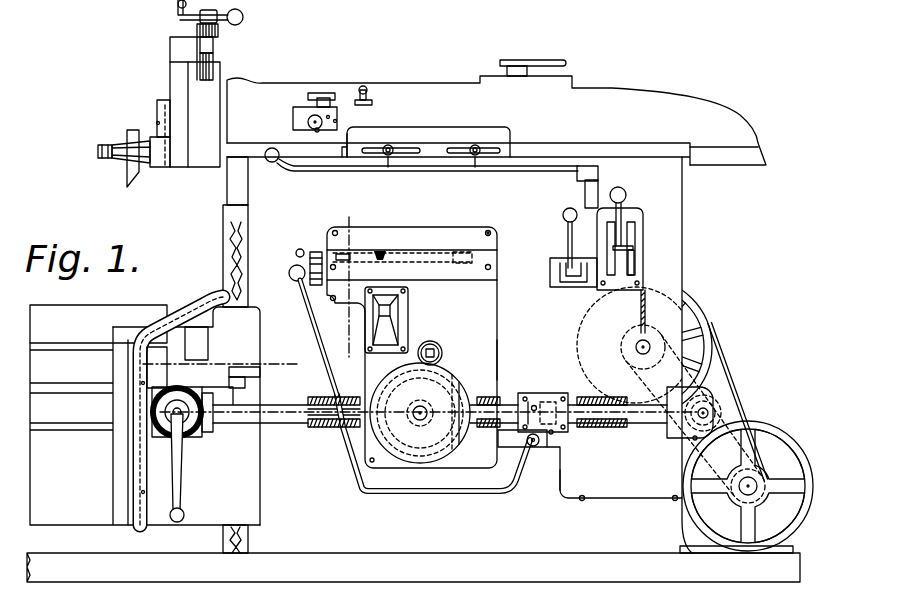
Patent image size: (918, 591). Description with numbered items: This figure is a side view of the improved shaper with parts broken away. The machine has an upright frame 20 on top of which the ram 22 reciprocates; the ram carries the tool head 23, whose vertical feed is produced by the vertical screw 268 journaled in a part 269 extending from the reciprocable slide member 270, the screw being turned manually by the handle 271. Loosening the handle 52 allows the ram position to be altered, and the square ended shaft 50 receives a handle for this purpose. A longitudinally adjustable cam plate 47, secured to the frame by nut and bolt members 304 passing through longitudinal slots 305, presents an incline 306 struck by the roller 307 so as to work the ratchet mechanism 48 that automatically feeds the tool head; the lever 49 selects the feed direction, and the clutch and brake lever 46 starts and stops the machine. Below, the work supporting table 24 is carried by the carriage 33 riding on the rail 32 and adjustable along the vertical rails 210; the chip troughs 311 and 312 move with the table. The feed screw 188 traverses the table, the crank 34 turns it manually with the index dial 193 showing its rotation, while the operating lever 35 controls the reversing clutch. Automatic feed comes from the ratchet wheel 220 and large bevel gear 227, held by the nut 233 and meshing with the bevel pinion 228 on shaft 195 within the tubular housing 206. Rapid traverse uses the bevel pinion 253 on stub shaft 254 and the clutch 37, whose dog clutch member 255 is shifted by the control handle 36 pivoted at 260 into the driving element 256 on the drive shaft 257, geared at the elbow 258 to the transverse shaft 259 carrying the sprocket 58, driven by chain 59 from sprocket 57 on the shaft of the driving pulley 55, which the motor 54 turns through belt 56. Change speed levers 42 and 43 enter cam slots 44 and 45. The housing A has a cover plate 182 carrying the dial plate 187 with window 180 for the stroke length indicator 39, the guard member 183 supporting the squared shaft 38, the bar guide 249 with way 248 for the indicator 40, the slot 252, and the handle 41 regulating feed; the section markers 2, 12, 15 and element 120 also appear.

The handle 271 is at (244, 17).
The part 269 is at (219, 40).
The vertical screw 268 is at (214, 70).
The vertical reciprocable slide member 270 is at (170, 73).
The tool head 23 is at (201, 160).
The ram 22 is at (683, 103).
The handle 52 is at (548, 60).
The lever 49 is at (319, 93).
The ratchet mechanism 48 is at (308, 122).
The roller 307 is at (315, 131).
The square ended shaft 50 is at (365, 86).
The incline 306 is at (351, 132).
The cam plate 47 is at (388, 127).
The nut and bolt members 304 is at (472, 147).
The longitudinal slots 305 is at (511, 141).
The clutch and brake lever 46 is at (281, 172).
The rod bracket 120 is at (600, 186).
The upright frame 20 is at (248, 208).
The vertical rails 210 is at (223, 243).
The carriage 33 is at (122, 517).
The work supporting table 24 is at (108, 305).
The transverse trough 312 is at (198, 302).
The vertical troughs 311 is at (128, 487).
The rail 32 is at (162, 346).
The operating lever 35 is at (246, 367).
The section line 15 is at (122, 379).
The section line 12 is at (280, 429).
The index dial 193 is at (206, 428).
The feed screw 188 is at (182, 425).
The crank 34 is at (184, 510).
The shaft 195 is at (315, 428).
The tubular housing 206 is at (327, 433).
The housing A is at (498, 324).
The section line 2 is at (356, 213).
The longitudinal horizontal slot 252 is at (363, 252).
The indicator 40 is at (387, 253).
The way 248 is at (462, 252).
The bar guide 249 is at (485, 253).
The dial plate 187 is at (408, 313).
The window 180 is at (395, 320).
The stroke length indicator 39 is at (392, 308).
The square ended shaft 38 is at (439, 344).
The guard or guide member 183 is at (440, 350).
The cover plate 182 is at (498, 358).
The handle 41 is at (302, 254).
The control handle 36 is at (304, 291).
The ratchet wheel 220 is at (425, 448).
The bevel pinion 228 is at (391, 450).
The nut 233 is at (427, 424).
The large bevel gear 227 is at (416, 430).
The bevel pinion 253 is at (455, 387).
The clutch 37 is at (537, 393).
The stub shaft 254 is at (511, 410).
The rapid traverse drive shaft 257 is at (602, 428).
The sprocket 58 is at (724, 406).
The pivot 260 is at (527, 441).
The dog clutch member 255 is at (551, 434).
The driving clutch element 256 is at (561, 478).
The transverse shaft 259 is at (677, 434).
The elbow 258 is at (693, 440).
The cam slots 44 is at (565, 265).
The change speed lever 42 is at (567, 238).
The cam slots 45 is at (633, 262).
The change speed lever 43 is at (628, 200).
The sprocket 57 is at (647, 339).
The driving pulley 55 is at (702, 320).
The belt 56 is at (721, 352).
The motor 54 is at (771, 432).
The chain 59 is at (700, 380).